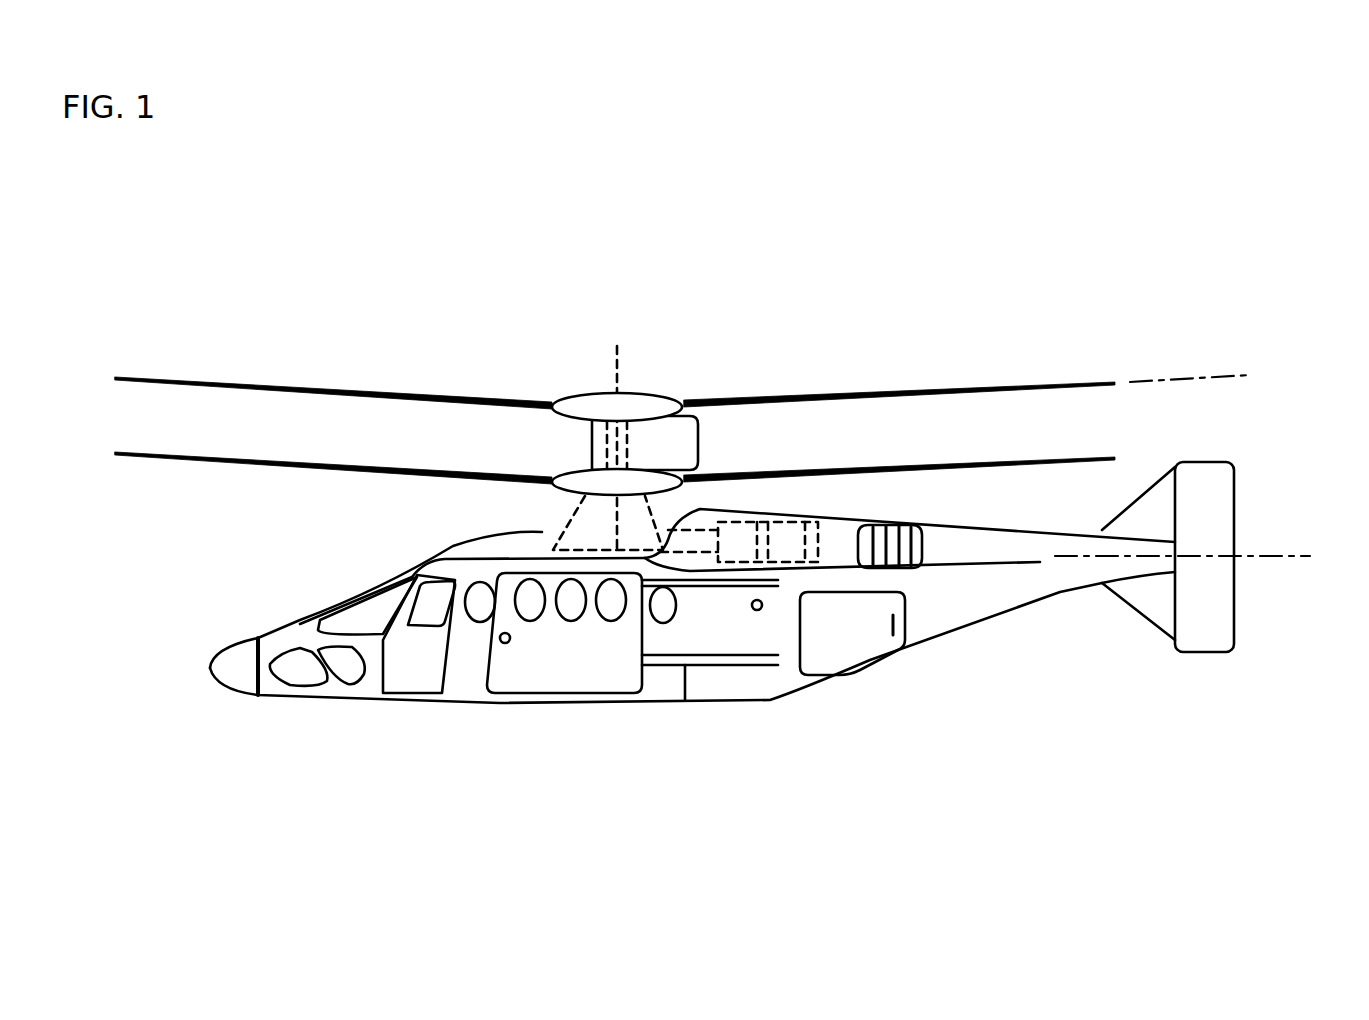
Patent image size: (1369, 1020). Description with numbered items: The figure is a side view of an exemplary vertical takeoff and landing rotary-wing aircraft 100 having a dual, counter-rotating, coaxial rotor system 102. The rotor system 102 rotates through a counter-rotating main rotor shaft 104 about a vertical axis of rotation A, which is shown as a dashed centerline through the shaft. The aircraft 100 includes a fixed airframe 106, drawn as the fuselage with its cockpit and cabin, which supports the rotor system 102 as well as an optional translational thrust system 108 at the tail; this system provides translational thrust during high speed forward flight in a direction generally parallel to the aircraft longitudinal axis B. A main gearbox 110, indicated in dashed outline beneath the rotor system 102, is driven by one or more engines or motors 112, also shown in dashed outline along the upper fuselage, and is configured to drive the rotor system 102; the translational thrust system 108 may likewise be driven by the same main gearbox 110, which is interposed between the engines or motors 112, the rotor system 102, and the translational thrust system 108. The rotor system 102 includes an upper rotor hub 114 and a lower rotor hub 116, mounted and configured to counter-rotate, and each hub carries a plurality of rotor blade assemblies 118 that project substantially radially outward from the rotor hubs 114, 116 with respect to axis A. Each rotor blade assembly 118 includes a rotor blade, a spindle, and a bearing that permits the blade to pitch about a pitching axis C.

The rotary-wing aircraft 100 is at (946, 290).
The rotor system 102 is at (636, 360).
The main rotor shaft 104 is at (605, 442).
The airframe 106 is at (462, 691).
The translational thrust system 108 is at (1205, 468).
The main gearbox 110 is at (577, 533).
The engines or motors 112 is at (775, 532).
The upper rotor hub 114 is at (667, 393).
The lower rotor hub 116 is at (560, 478).
The rotor blade assemblies 118 is at (285, 395).